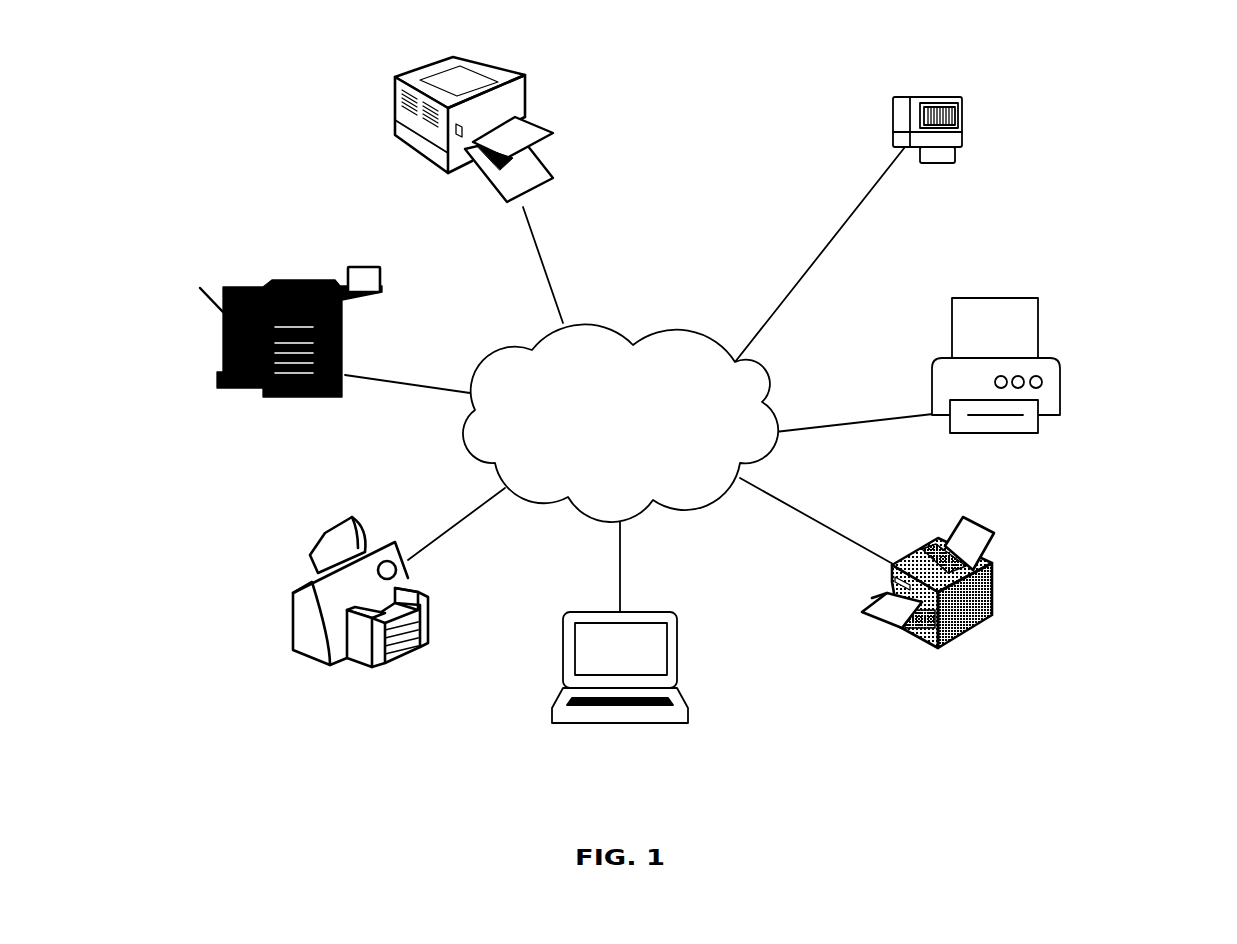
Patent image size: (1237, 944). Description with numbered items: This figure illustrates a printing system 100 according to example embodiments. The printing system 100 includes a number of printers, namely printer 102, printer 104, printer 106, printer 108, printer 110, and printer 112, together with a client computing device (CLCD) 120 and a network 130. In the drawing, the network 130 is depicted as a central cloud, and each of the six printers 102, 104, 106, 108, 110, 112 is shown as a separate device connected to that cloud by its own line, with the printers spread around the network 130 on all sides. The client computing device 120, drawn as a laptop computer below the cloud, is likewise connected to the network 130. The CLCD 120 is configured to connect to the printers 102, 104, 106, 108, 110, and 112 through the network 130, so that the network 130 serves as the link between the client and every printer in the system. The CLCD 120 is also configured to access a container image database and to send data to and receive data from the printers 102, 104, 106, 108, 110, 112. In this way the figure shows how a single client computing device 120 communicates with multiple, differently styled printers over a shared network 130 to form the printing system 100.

The printing system 100 is at (1167, 92).
The printer 102 is at (527, 78).
The printer 104 is at (212, 298).
The printer 106 is at (295, 590).
The printer 108 is at (990, 600).
The printer 110 is at (1038, 322).
The printer 112 is at (960, 123).
The client computing device (CLCD) 120 is at (687, 708).
The network 130 is at (685, 424).